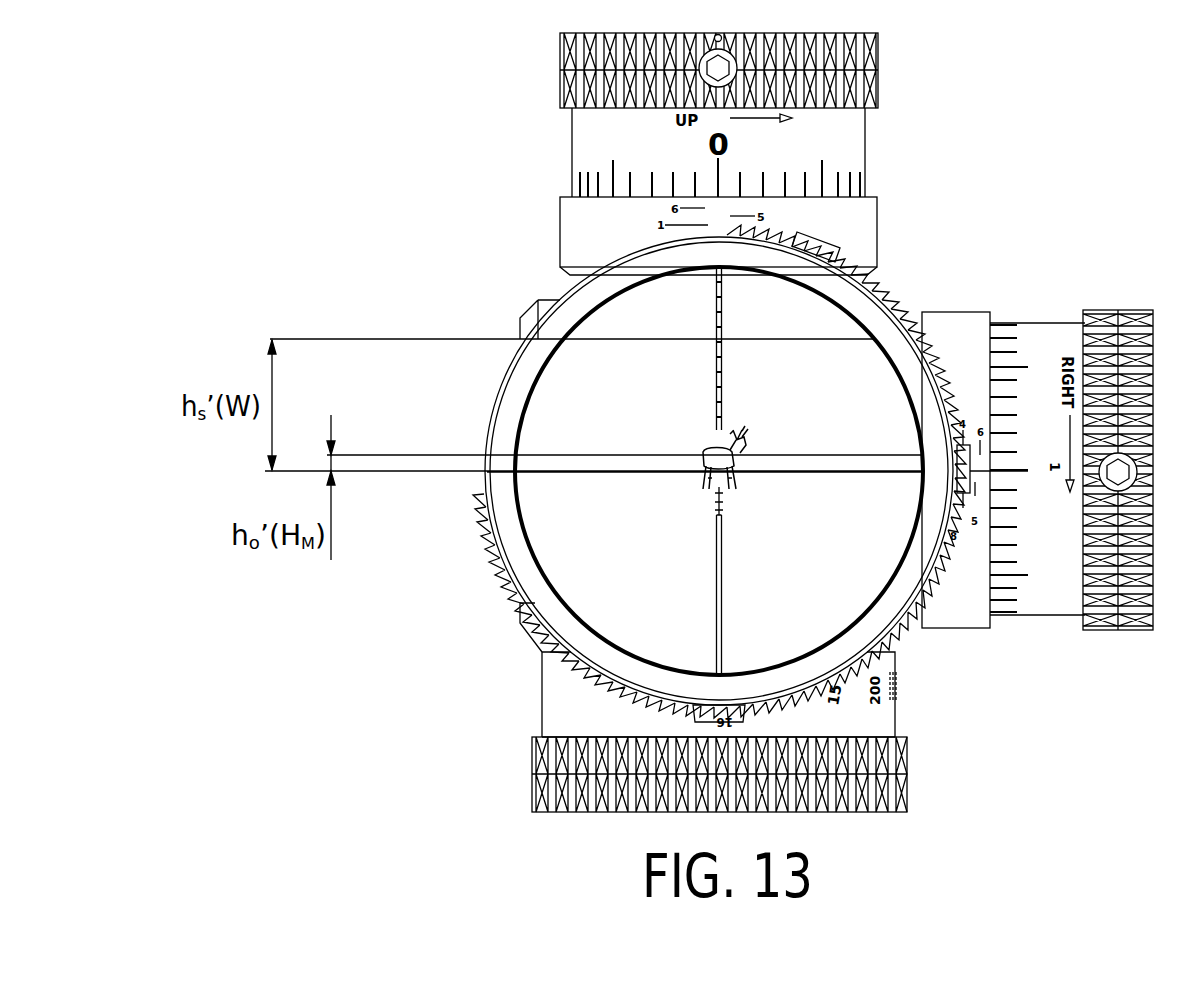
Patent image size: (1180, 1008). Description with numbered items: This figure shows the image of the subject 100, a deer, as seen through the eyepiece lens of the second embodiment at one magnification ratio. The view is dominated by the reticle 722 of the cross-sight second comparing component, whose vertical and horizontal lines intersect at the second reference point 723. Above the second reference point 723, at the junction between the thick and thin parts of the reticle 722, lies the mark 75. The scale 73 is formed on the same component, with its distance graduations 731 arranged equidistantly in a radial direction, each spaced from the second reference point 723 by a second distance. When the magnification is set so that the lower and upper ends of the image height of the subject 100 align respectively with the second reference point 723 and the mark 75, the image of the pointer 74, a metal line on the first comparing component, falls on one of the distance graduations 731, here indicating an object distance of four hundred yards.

The scale 73 is at (543, 331).
The distance graduations 731 is at (717, 302).
The pointer 74 is at (600, 344).
The mark 75 is at (727, 432).
The subject 100 is at (745, 432).
The reticle 722 is at (720, 557).
The second reference point 723 is at (718, 485).